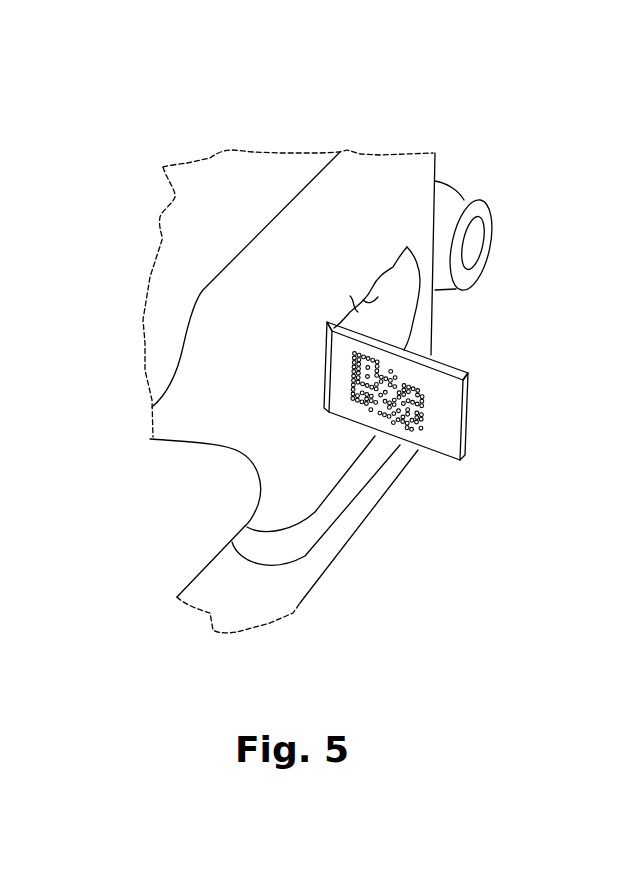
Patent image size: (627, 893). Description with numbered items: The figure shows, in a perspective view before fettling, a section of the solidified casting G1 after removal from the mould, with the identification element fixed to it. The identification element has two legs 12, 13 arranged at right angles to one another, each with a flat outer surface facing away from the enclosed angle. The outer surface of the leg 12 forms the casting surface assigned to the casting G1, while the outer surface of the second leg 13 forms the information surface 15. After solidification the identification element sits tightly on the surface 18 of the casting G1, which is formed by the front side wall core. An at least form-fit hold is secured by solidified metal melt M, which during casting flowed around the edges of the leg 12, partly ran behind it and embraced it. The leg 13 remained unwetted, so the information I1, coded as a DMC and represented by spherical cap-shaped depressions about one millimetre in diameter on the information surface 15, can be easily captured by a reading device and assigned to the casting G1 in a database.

The casting G1 is at (233, 193).
The surface of the casting 18 is at (340, 229).
The metal melt M is at (403, 295).
The leg 12 is at (355, 327).
The leg 13 is at (467, 410).
The information surface 15 is at (445, 446).
The information I1 is at (367, 418).